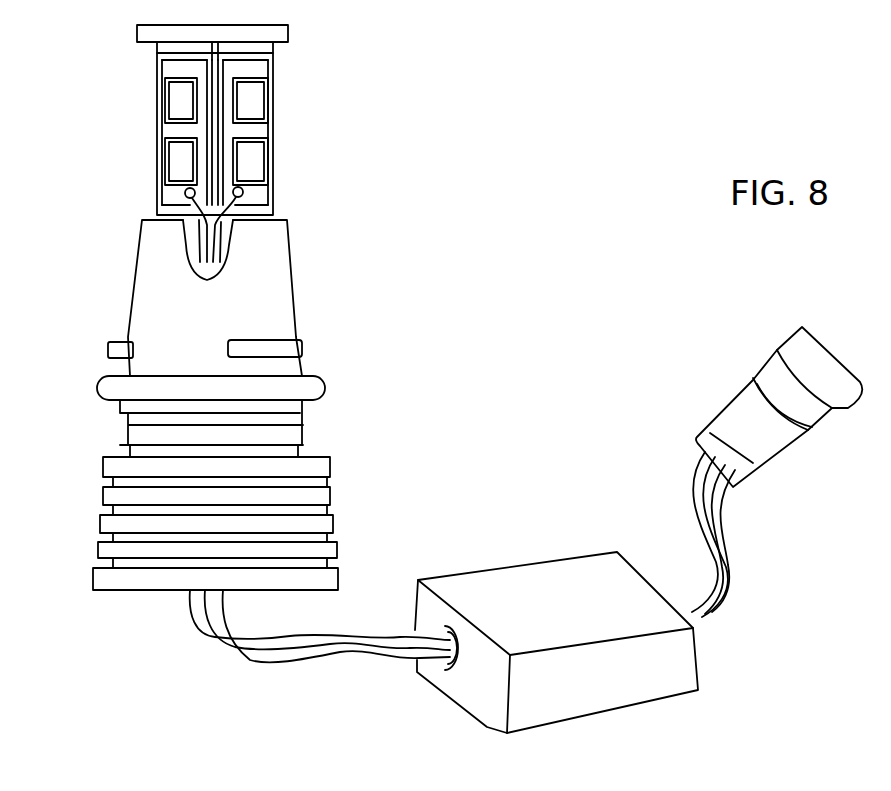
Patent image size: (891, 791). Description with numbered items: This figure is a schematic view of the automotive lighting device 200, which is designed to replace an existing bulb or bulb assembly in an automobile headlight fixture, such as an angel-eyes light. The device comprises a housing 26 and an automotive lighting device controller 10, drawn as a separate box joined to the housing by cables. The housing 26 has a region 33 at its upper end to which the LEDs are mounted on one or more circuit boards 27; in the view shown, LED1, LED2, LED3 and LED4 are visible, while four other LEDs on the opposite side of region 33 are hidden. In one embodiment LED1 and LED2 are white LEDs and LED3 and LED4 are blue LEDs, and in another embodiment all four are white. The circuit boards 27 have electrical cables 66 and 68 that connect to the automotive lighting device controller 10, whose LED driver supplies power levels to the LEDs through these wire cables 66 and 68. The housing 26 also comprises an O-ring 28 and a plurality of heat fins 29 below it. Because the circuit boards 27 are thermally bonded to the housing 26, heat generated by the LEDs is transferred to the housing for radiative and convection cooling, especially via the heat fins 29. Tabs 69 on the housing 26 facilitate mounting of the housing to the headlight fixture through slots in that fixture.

The automotive lighting device 200 is at (520, 203).
The automotive lighting device controller 10 is at (568, 530).
The region 33 is at (290, 118).
The element LED1 is at (268, 88).
The element LED2 is at (268, 146).
The element LED3 is at (160, 95).
The element LED4 is at (162, 150).
The circuit boards 27 is at (263, 192).
The wire cable 66 is at (203, 237).
The wire cable 68 is at (240, 228).
The housing 26 is at (325, 295).
The tabs 69 is at (295, 335).
The O-ring 28 is at (317, 372).
The heat fins 29 is at (350, 517).